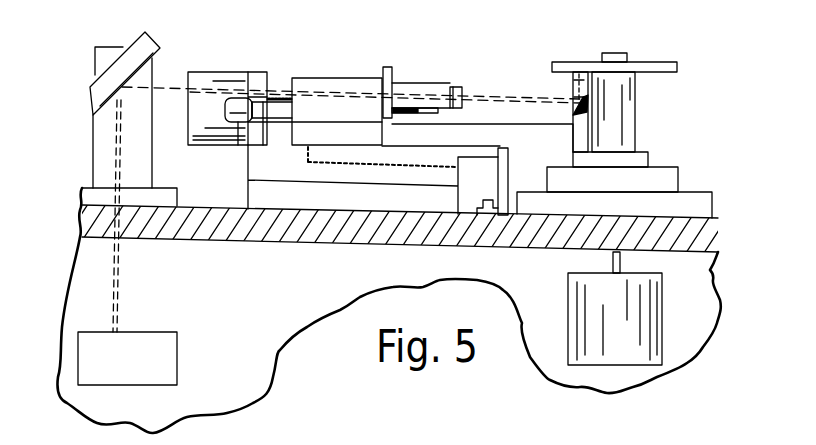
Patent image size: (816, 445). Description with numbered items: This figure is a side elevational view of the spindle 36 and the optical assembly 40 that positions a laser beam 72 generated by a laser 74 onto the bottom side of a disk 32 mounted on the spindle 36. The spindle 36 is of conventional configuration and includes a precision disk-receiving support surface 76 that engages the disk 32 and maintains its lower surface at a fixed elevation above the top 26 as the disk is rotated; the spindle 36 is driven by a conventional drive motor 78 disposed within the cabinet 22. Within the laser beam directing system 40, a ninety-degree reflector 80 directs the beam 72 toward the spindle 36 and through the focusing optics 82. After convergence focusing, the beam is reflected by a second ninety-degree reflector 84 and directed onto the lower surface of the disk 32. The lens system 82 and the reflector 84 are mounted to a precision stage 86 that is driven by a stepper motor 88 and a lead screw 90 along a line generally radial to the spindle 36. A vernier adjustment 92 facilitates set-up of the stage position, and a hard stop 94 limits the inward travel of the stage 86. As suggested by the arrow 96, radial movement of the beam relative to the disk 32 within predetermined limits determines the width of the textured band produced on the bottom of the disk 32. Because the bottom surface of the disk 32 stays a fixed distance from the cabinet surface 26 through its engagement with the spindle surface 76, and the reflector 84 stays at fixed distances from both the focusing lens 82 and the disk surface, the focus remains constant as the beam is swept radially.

The cabinet 22 is at (271, 329).
The top 26 is at (92, 189).
The disk 32 is at (675, 62).
The spindle 36 is at (633, 133).
The optical assembly 40 is at (330, 210).
The laser beam 72 is at (500, 100).
The laser 74 is at (166, 334).
The disk-receiving support surface 76 is at (638, 62).
The drive motor 78 is at (662, 323).
The 90° reflector 80 is at (150, 63).
The focusing optics 82 is at (457, 84).
The second 90° reflector 84 is at (573, 102).
The precision stage 86 is at (479, 148).
The stepper motor 88 is at (214, 78).
The lead screw 90 is at (281, 98).
The vernier adjustment 92 is at (236, 137).
The hard stop 94 is at (498, 192).
The arrow 96 is at (573, 70).